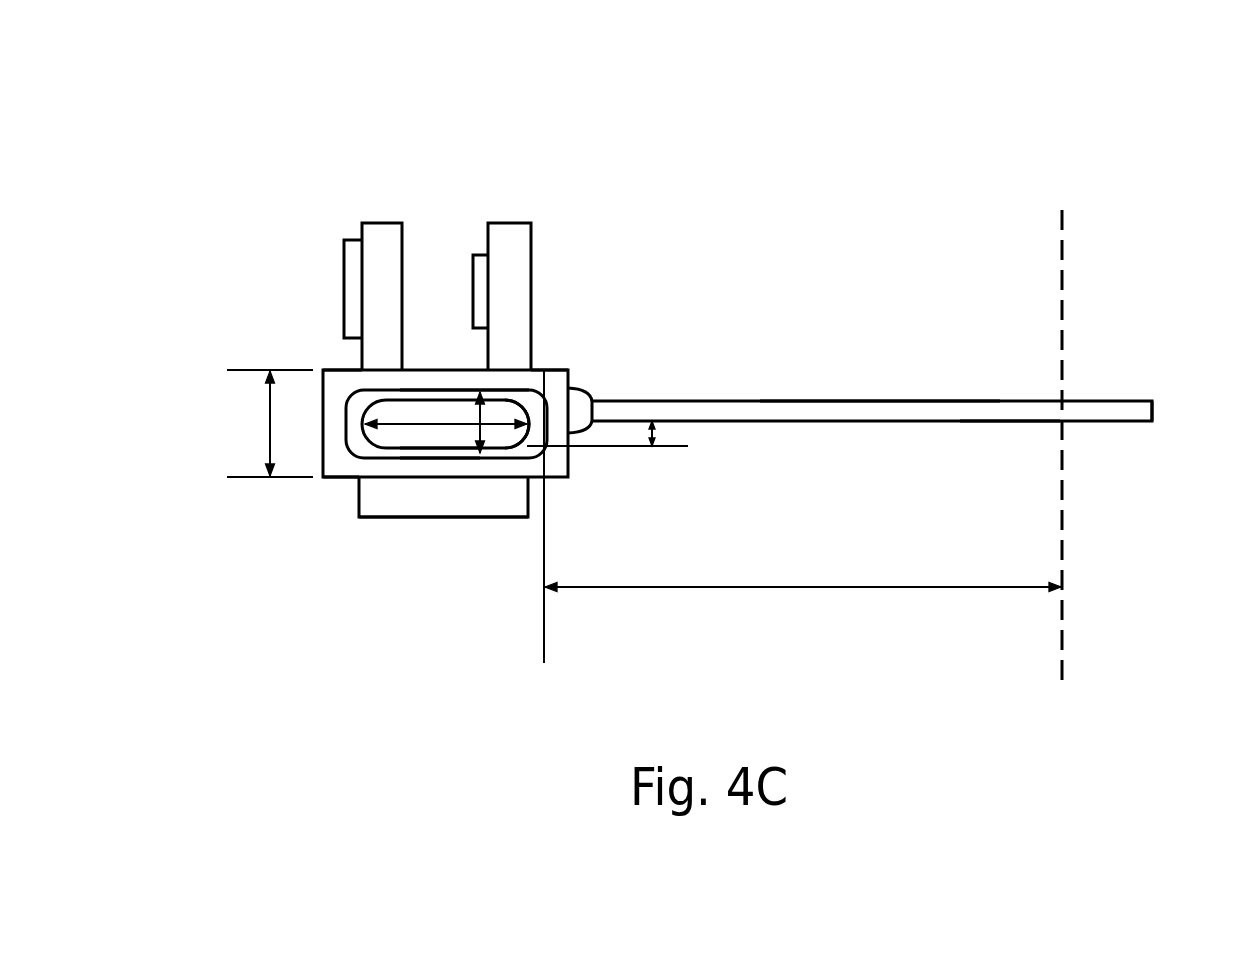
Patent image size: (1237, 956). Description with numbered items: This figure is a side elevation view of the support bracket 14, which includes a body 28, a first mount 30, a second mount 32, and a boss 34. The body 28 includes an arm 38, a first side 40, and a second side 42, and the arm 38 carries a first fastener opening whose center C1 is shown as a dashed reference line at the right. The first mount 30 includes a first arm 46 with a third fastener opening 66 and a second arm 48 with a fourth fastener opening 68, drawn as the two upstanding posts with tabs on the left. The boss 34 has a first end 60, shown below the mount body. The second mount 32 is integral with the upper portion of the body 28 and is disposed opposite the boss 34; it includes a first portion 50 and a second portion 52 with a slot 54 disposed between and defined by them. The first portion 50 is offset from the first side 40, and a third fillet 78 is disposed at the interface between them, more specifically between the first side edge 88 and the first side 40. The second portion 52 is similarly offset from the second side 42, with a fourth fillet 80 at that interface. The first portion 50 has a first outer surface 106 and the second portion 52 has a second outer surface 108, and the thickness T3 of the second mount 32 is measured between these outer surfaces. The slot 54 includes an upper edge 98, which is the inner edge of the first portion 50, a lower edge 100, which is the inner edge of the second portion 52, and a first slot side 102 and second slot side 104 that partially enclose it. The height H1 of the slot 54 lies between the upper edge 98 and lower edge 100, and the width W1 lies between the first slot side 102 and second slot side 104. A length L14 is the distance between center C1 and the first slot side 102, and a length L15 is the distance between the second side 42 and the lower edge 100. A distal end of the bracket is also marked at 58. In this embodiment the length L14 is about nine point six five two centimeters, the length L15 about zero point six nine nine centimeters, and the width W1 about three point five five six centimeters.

The support bracket 14 is at (840, 318).
The body 28 is at (950, 401).
The first mount 30 is at (400, 178).
The second mount 32 is at (342, 480).
The boss 34 is at (397, 518).
The arm 38 is at (805, 410).
The first side 40 is at (865, 400).
The second side 42 is at (1002, 422).
The first arm 46 is at (377, 222).
The second arm 48 is at (518, 222).
The first portion 50 is at (498, 392).
The second portion 52 is at (448, 448).
The slot 54 is at (413, 412).
The lead distal end 58 is at (1153, 412).
The first end 60 is at (432, 518).
The third fastener opening 66 is at (344, 255).
The fourth fastener opening 68 is at (473, 262).
The third fillet 78 is at (580, 396).
The fourth fillet 80 is at (574, 424).
The first side edge 88 is at (569, 370).
The upper edge 98 is at (457, 389).
The lower edge 100 is at (437, 458).
The first slot side 102 is at (345, 417).
The second slot side 104 is at (497, 437).
The first outer surface 106 is at (338, 370).
The second outer surface 108 is at (376, 481).
The thickness T3 is at (268, 416).
The width W1 is at (408, 440).
The height H1 is at (483, 452).
The length L14 is at (823, 585).
The length L15 is at (660, 432).
The center C1 is at (1063, 608).